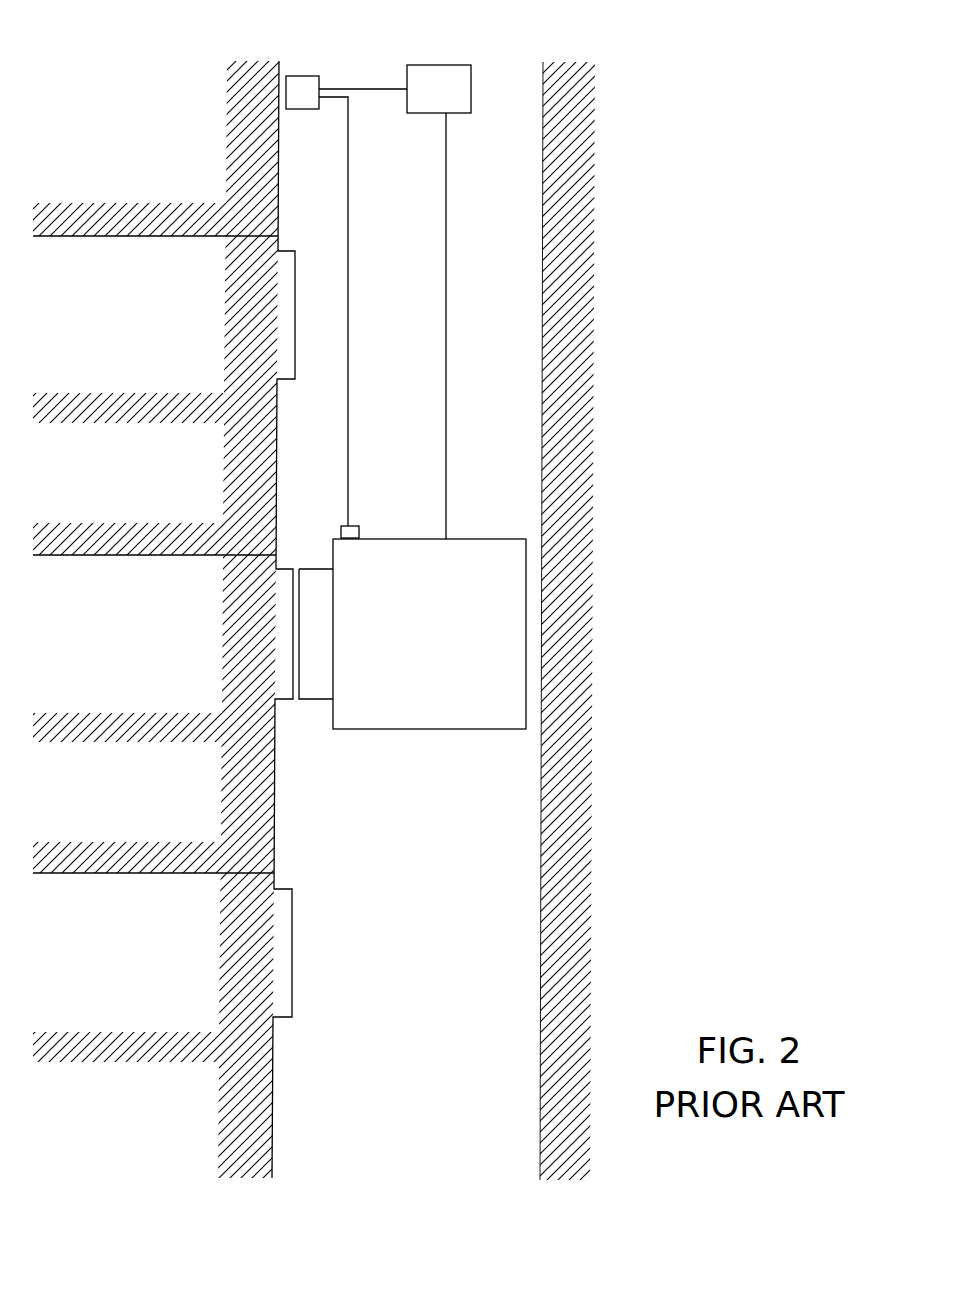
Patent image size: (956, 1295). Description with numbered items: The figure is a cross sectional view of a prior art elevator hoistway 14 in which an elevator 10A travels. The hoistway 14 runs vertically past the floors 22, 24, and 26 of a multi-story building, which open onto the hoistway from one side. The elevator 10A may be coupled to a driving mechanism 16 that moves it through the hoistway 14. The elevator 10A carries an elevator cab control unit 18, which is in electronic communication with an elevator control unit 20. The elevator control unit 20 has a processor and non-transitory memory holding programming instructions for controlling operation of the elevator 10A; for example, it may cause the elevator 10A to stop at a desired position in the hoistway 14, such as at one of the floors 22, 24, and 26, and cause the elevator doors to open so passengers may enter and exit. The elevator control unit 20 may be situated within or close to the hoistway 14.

The elevator 10A is at (424, 734).
The elevator hoistway 14 is at (503, 148).
The driving mechanism 16 is at (474, 79).
The elevator cab control unit 18 is at (364, 523).
The elevator control unit 20 is at (307, 74).
The floor 22 is at (139, 960).
The floor 24 is at (129, 642).
The floor 26 is at (123, 330).